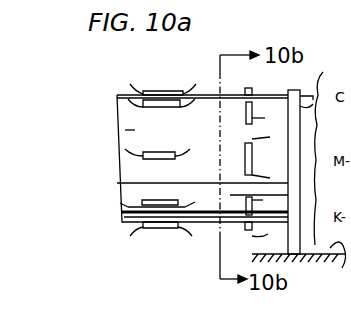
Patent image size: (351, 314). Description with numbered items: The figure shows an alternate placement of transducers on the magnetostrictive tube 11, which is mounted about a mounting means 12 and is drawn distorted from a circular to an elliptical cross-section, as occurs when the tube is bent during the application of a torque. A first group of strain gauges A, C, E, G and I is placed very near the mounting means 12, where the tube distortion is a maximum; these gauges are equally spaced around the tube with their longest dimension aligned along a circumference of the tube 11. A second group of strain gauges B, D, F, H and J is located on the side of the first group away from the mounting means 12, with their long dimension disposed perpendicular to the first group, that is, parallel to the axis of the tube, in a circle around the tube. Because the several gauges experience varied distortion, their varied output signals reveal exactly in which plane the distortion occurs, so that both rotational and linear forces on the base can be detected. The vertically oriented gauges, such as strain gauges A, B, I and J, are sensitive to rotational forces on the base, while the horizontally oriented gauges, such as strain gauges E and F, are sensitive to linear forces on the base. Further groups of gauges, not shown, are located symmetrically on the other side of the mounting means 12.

The magnetostrictive tube 11 is at (117, 167).
The mounting means 12 is at (318, 159).
The strain gauge A is at (252, 90).
The strain gauge B is at (145, 91).
The strain gauge C is at (245, 118).
The strain gauge D is at (162, 107).
The strain gauge E is at (252, 156).
The strain gauge F is at (158, 152).
The strain gauge G is at (246, 200).
The strain gauge H is at (168, 200).
The strain gauge I is at (246, 230).
The strain gauge J is at (165, 228).